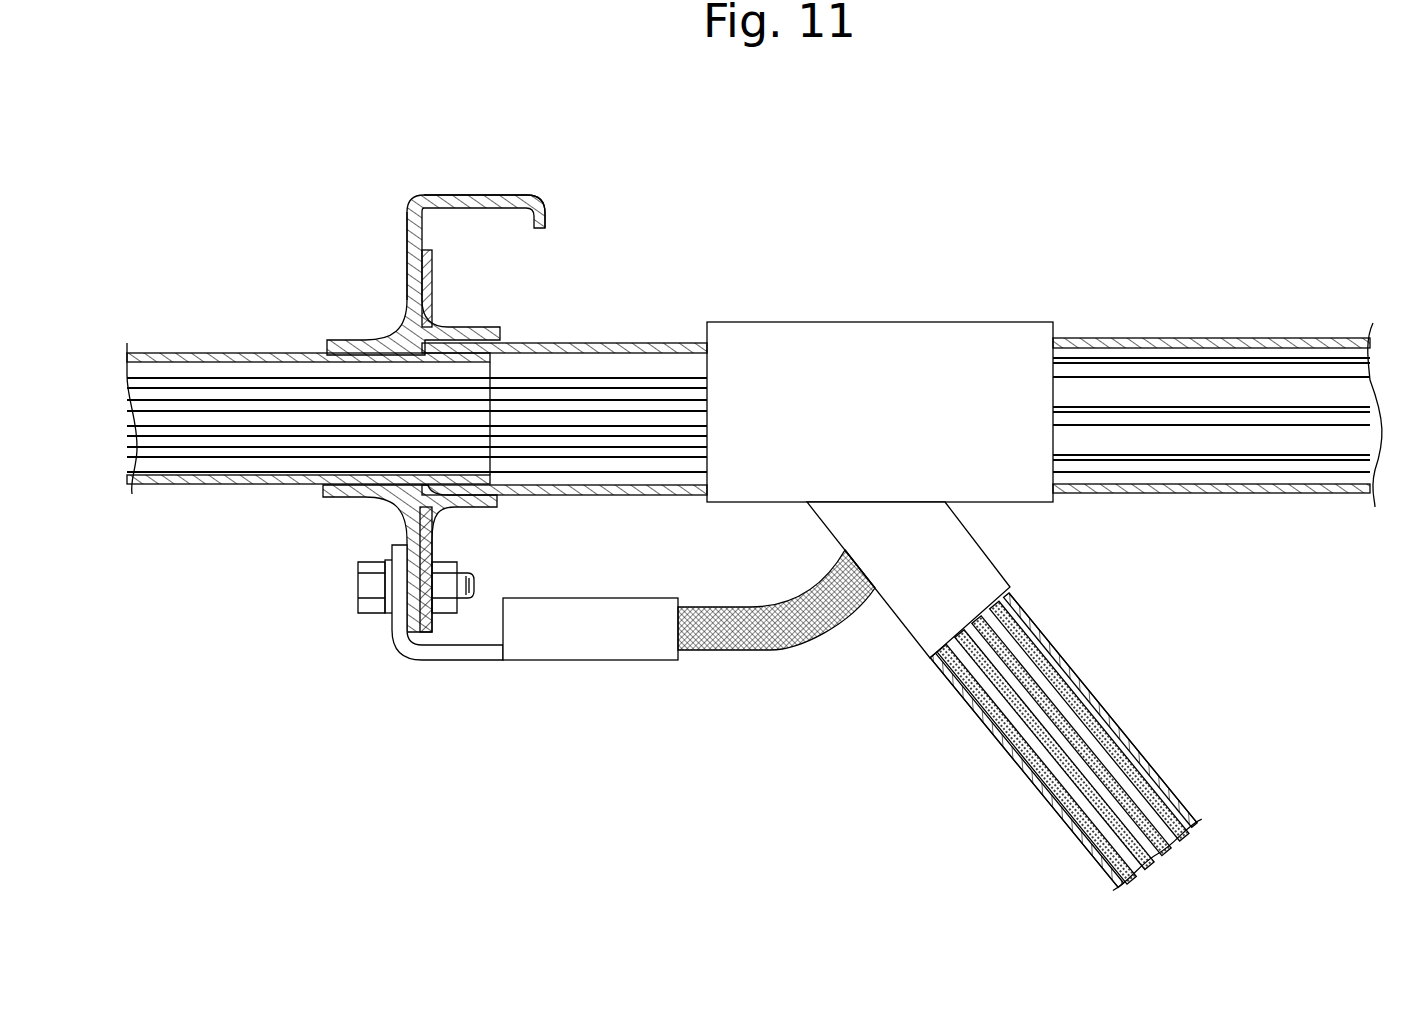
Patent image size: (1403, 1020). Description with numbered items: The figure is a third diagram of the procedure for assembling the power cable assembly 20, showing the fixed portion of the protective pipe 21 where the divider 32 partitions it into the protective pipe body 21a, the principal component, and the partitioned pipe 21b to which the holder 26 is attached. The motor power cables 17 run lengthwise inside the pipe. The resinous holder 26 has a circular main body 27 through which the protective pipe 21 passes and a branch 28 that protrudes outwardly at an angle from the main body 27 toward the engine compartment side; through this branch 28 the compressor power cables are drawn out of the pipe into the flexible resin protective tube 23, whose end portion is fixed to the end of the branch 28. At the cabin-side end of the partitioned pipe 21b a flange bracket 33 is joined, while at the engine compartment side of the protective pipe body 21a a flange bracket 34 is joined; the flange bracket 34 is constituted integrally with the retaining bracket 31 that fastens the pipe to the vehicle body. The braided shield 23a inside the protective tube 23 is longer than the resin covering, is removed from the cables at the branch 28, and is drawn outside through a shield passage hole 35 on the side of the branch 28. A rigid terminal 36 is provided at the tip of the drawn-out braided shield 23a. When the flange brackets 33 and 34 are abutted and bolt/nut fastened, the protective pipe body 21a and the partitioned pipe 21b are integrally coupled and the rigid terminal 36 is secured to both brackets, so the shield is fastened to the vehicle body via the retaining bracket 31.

The motor power cables 17 is at (1270, 463).
The power cable assembly 20 is at (990, 168).
The protective pipe 21 is at (626, 337).
The protective pipe body 21a is at (217, 352).
The partitioned pipe 21b is at (1157, 338).
The protective tube 23 is at (1025, 775).
The braided shield 23a is at (793, 651).
The holder 26 is at (1023, 321).
The main body 27 is at (949, 322).
The branch 28 is at (900, 622).
The retaining bracket 31 is at (503, 192).
The divider 32 is at (369, 308).
The flange bracket 33 is at (433, 278).
The flange bracket 34 is at (407, 265).
The shield passage hole 35 is at (838, 553).
The rigid terminal 36 is at (612, 660).